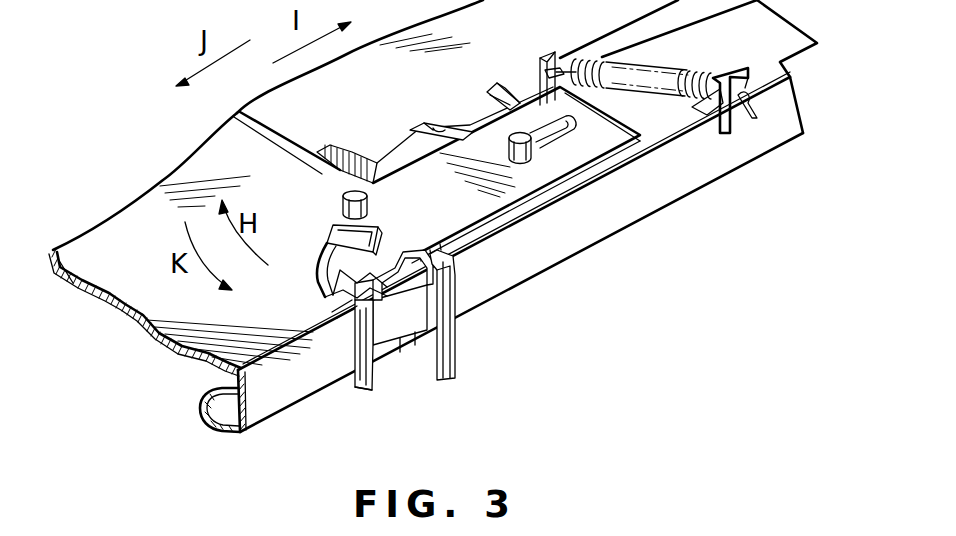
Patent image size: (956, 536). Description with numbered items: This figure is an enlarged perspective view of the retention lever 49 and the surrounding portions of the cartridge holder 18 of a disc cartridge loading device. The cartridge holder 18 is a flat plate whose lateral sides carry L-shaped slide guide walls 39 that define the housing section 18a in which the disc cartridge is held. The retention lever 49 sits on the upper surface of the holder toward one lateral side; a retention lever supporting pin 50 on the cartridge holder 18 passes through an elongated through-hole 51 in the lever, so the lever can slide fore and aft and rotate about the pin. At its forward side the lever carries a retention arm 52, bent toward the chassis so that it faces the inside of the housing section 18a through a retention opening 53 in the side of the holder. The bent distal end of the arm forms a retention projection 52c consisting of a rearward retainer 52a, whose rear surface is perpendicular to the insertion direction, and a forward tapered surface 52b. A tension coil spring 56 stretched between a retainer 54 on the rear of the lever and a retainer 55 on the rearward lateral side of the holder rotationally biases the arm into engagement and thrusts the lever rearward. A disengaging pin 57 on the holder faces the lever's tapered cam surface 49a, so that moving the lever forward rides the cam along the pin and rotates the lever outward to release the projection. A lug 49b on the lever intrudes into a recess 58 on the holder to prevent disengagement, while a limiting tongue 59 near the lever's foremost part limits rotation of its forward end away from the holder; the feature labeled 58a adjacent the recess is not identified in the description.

The cartridge holder 18 is at (787, 113).
The housing section 18a is at (173, 347).
The slide guide wall 39 is at (232, 389).
The retention lever 49 is at (483, 200).
The cam surface 49a is at (372, 160).
The lug 49b is at (490, 128).
The retention lever supporting pin 50 is at (523, 162).
The elongated through-hole 51 is at (567, 133).
The retention arm 52 is at (413, 347).
The retainer 52a is at (390, 277).
The tapered surface 52b is at (368, 360).
The retention projection 52c is at (333, 312).
The retention opening 53 is at (323, 300).
The retainer (limiting tongue) 54 is at (553, 56).
The retainer 55 is at (740, 72).
The tension coil spring 56 is at (698, 72).
The disengaging pin 57 is at (343, 208).
The recess 58 is at (448, 123).
The top plate of bracket 58a is at (333, 229).
The limiting tongue 59 is at (447, 333).